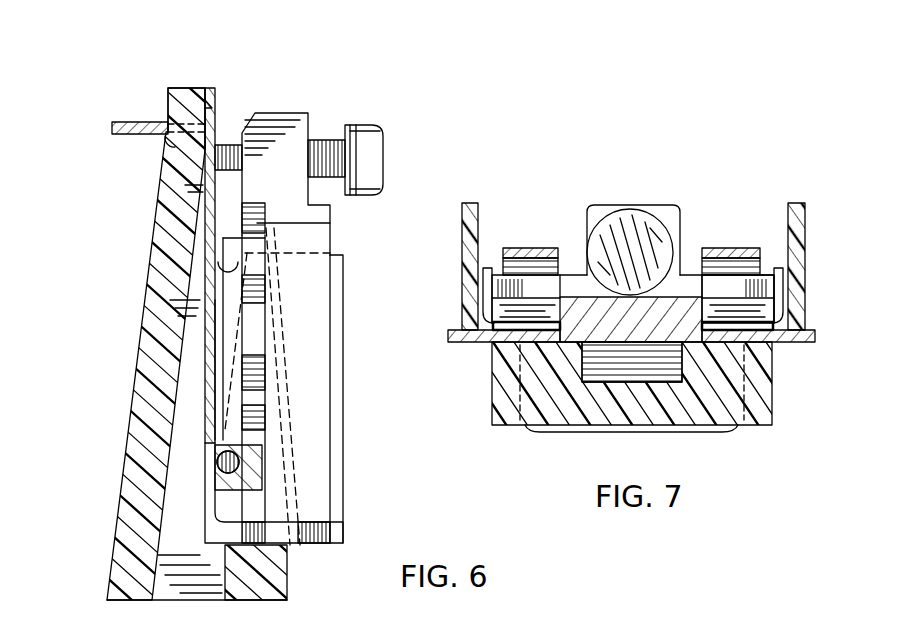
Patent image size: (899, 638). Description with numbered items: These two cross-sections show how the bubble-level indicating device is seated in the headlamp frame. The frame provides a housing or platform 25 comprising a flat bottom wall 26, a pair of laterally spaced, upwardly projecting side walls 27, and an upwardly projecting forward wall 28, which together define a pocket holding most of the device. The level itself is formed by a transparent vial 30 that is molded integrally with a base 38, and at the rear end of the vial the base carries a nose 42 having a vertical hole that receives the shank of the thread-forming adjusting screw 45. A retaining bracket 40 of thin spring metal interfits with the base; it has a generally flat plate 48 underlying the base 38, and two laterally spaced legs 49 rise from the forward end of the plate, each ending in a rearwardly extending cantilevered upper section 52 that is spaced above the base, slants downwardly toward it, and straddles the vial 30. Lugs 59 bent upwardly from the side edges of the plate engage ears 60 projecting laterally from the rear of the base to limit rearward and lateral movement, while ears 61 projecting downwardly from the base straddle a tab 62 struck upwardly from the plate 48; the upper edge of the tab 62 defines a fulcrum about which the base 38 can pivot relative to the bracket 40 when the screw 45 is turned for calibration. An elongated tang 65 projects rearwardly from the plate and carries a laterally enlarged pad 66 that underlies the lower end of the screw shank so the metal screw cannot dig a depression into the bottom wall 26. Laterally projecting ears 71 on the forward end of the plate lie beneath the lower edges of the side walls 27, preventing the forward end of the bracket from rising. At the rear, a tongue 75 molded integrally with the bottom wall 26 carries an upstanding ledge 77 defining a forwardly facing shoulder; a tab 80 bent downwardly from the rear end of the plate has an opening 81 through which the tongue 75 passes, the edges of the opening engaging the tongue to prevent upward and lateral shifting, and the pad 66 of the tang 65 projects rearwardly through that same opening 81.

In FIG. 7, the platform 25 is at (486, 413).
In FIG. 6, the bottom wall 26 is at (140, 378).
In FIG. 7, the bottom wall 26 is at (752, 372).
In FIG. 6, the side walls 27 is at (335, 455).
In FIG. 7, the side walls 27 is at (470, 250).
In FIG. 6, the forward wall 28 is at (272, 578).
In FIG. 6, the vial 30 is at (322, 240).
In FIG. 7, the vial 30 is at (668, 205).
In FIG. 6, the base 38 is at (225, 385).
In FIG. 7, the base 38 is at (577, 273).
In FIG. 6, the retaining bracket 40 is at (212, 335).
In FIG. 7, the retaining bracket 40 is at (517, 346).
In FIG. 6, the nose 42 is at (280, 130).
In FIG. 6, the adjusting screw 45 is at (372, 150).
In FIG. 6, the plate 48 is at (250, 418).
In FIG. 7, the plate 48 is at (733, 325).
In FIG. 7, the legs 49 is at (513, 246).
In FIG. 6, the cantilevered upper section 52 is at (283, 358).
In FIG. 7, the cantilevered upper section 52 is at (532, 250).
In FIG. 6, the lugs 59 is at (220, 302).
In FIG. 7, the lugs 59 is at (488, 296).
In FIG. 6, the ears 60 is at (260, 222).
In FIG. 6, the ears 61 is at (212, 450).
In FIG. 7, the ears 61 is at (503, 333).
In FIG. 6, the tab 62 is at (240, 470).
In FIG. 7, the tab 62 is at (608, 365).
In FIG. 6, the tang 65 is at (200, 190).
In FIG. 6, the pad 66 is at (218, 140).
In FIG. 7, the ears 71 is at (455, 338).
In FIG. 6, the tongue 75 is at (178, 95).
In FIG. 6, the ledge 77 is at (216, 135).
In FIG. 6, the tab 80 is at (128, 122).
In FIG. 6, the opening 81 is at (170, 143).